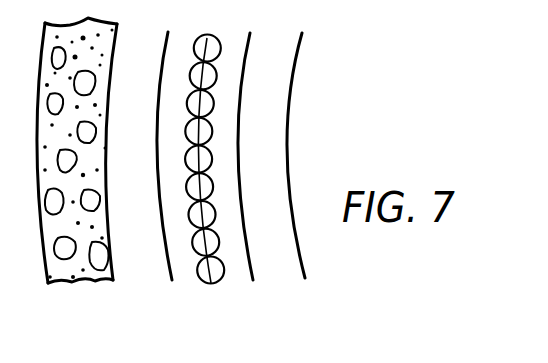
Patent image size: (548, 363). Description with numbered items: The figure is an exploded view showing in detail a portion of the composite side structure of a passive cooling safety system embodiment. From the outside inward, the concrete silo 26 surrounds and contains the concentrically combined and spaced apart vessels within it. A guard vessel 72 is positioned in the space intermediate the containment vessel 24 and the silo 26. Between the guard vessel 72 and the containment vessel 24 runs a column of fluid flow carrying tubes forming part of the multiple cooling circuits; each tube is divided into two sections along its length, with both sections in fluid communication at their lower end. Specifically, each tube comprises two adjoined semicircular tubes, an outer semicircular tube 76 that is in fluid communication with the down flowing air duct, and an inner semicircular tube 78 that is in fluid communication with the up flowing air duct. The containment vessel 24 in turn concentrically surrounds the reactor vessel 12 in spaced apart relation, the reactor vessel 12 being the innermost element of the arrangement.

The reactor vessel 12 is at (292, 103).
The containment vessel 24 is at (242, 162).
The concrete silo 26 is at (108, 218).
The guard vessel 72 is at (162, 75).
The outer semicircular tube 76 is at (197, 38).
The inner semicircular tube 78 is at (220, 37).